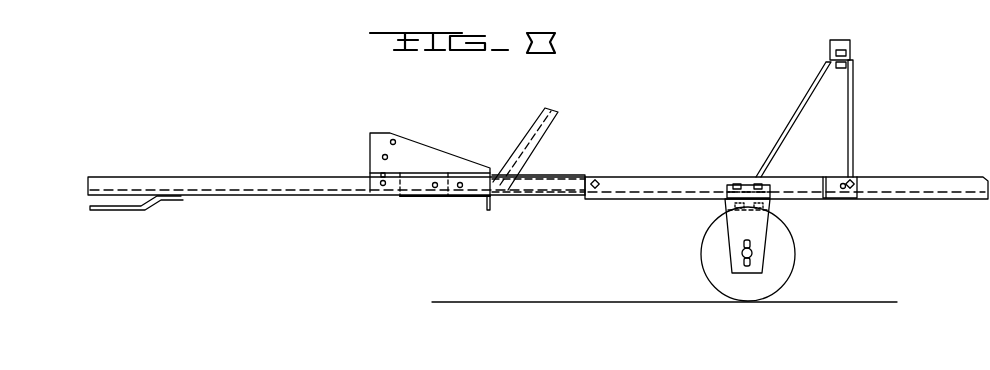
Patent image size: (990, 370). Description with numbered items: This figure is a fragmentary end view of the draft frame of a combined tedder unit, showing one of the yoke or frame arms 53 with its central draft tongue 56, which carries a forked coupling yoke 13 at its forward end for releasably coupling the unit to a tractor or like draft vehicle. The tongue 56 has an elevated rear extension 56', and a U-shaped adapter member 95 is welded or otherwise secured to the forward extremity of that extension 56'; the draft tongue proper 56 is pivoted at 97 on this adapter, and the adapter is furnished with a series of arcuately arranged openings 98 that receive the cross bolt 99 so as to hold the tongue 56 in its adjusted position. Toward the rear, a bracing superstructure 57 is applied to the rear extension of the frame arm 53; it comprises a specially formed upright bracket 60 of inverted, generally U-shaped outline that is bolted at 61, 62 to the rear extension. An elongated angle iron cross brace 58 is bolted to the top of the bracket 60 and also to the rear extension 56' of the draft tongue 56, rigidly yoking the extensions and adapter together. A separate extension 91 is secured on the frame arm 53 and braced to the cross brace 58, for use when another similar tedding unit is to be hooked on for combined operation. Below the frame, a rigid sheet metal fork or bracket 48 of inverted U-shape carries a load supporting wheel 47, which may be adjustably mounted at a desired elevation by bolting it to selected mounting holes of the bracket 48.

The forked coupling yoke 13 is at (140, 212).
The central draft tongue 56 is at (336, 173).
The elevated rear extension 56' is at (525, 149).
The U-shaped adapter member 95 is at (452, 162).
The arcuately arranged openings 98 is at (388, 155).
The cross bolt 99 is at (385, 186).
The pivot 97 is at (462, 188).
The yoke or frame arms 53 is at (578, 177).
The separate extension 91 is at (696, 181).
The bolt 61 is at (727, 194).
The fork or bracket 48 is at (757, 240).
The wheel 47 is at (778, 277).
The cross brace 58 is at (852, 57).
The bracing superstructure 57 is at (864, 122).
The upright bracket 60 is at (855, 157).
The bolt 62 is at (850, 200).